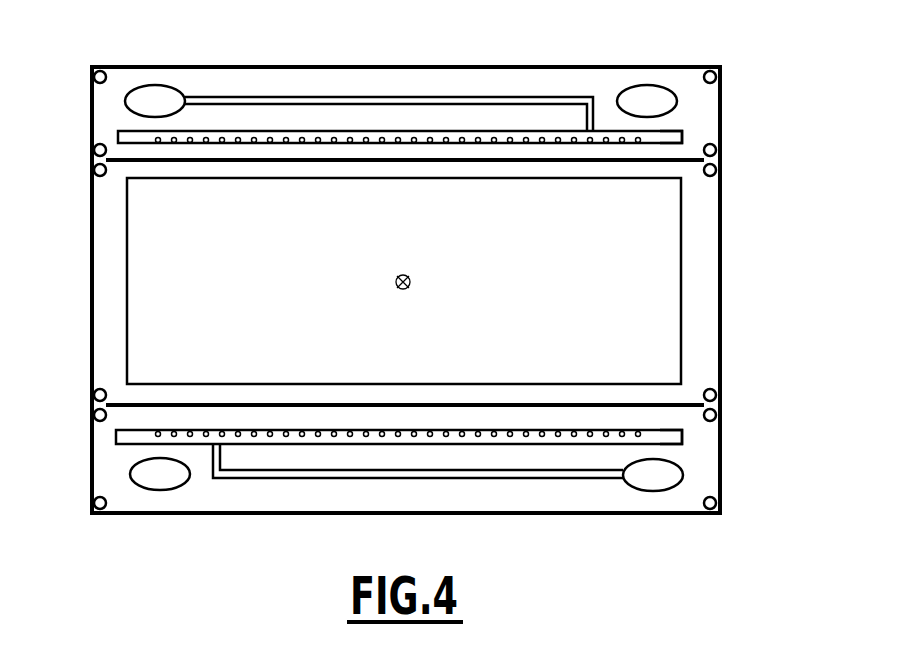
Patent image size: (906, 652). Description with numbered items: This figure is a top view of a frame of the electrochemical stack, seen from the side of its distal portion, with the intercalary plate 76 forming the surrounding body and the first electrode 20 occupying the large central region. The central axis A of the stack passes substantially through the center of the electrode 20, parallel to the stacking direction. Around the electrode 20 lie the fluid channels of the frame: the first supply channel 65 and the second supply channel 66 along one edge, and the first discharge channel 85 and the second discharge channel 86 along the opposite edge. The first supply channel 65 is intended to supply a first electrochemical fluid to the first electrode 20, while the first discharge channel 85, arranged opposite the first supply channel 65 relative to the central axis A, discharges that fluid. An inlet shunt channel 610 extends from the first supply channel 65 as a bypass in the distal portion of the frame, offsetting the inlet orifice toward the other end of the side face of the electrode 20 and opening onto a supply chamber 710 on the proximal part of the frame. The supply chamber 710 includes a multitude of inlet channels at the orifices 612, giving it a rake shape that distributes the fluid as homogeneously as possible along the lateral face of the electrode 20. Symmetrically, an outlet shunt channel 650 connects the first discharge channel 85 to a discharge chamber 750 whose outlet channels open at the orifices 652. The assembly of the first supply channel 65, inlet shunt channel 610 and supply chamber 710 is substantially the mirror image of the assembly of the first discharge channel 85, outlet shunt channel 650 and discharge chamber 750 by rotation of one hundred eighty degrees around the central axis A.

The intercalary plate 76 is at (705, 246).
The first electrode 20 is at (630, 302).
The central axis A is at (395, 281).
The first supply channel 65 is at (153, 100).
The second supply channel 66 is at (653, 100).
The first discharge channel 85 is at (655, 478).
The second discharge channel 86 is at (157, 475).
The inlet shunt channel 610 is at (451, 96).
The inlet orifices 612 is at (120, 138).
The supply chamber 710 is at (668, 137).
The outlet shunt channel 650 is at (492, 473).
The outlet orifices 652 is at (118, 437).
The discharge chamber 750 is at (672, 437).